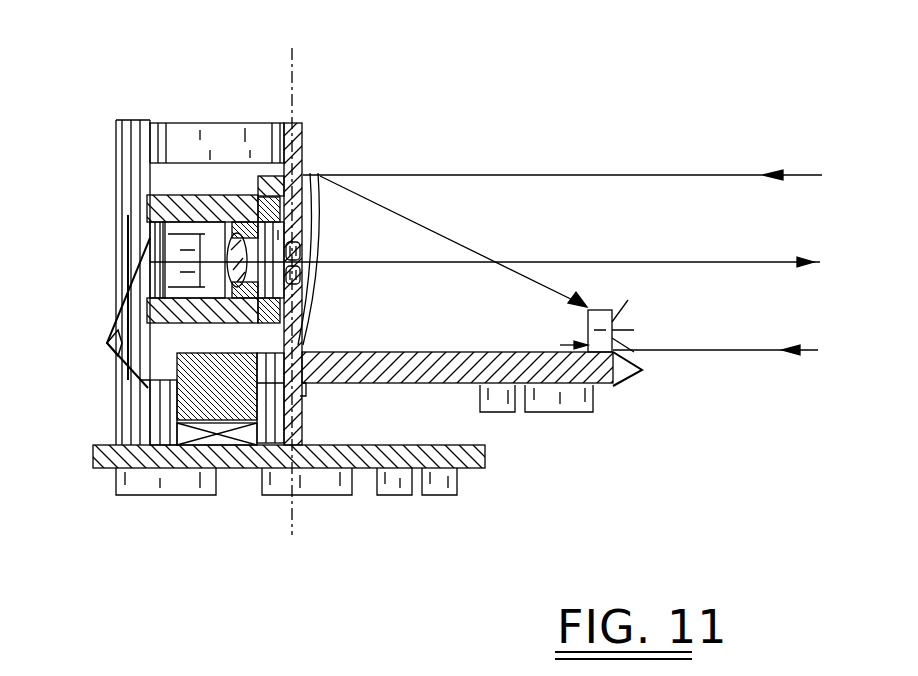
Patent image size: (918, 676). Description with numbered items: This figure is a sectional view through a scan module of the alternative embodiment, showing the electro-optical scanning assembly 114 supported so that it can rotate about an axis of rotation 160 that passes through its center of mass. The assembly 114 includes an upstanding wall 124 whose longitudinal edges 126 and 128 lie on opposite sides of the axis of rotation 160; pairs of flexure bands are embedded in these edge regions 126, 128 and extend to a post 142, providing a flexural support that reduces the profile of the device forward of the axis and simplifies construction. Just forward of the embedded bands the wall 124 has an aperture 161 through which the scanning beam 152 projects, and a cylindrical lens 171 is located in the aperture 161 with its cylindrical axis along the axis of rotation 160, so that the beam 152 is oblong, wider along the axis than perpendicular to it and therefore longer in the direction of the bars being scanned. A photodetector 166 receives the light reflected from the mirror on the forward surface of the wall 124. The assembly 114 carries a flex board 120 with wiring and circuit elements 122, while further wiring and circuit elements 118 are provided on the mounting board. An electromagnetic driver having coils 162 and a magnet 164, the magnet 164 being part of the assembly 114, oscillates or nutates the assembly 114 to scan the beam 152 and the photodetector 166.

The axis of rotation 160 is at (297, 76).
The longitudinal edge of the wall 126 is at (303, 127).
The upstanding wall 124 is at (305, 173).
The post 142 is at (118, 168).
The scanning beam 152 is at (637, 262).
The cylindrical lens 171 is at (305, 272).
The aperture 161 is at (308, 293).
The photodetector 166 is at (618, 303).
The flex board 120 is at (640, 364).
The longitudinal edge of the wall 128 is at (305, 386).
The electro-optical scanning assembly 114 is at (457, 368).
The wiring and circuit elements 122 is at (500, 413).
The wiring and circuit elements 118 is at (145, 486).
The coils 162 is at (236, 470).
The magnet 164 is at (112, 393).